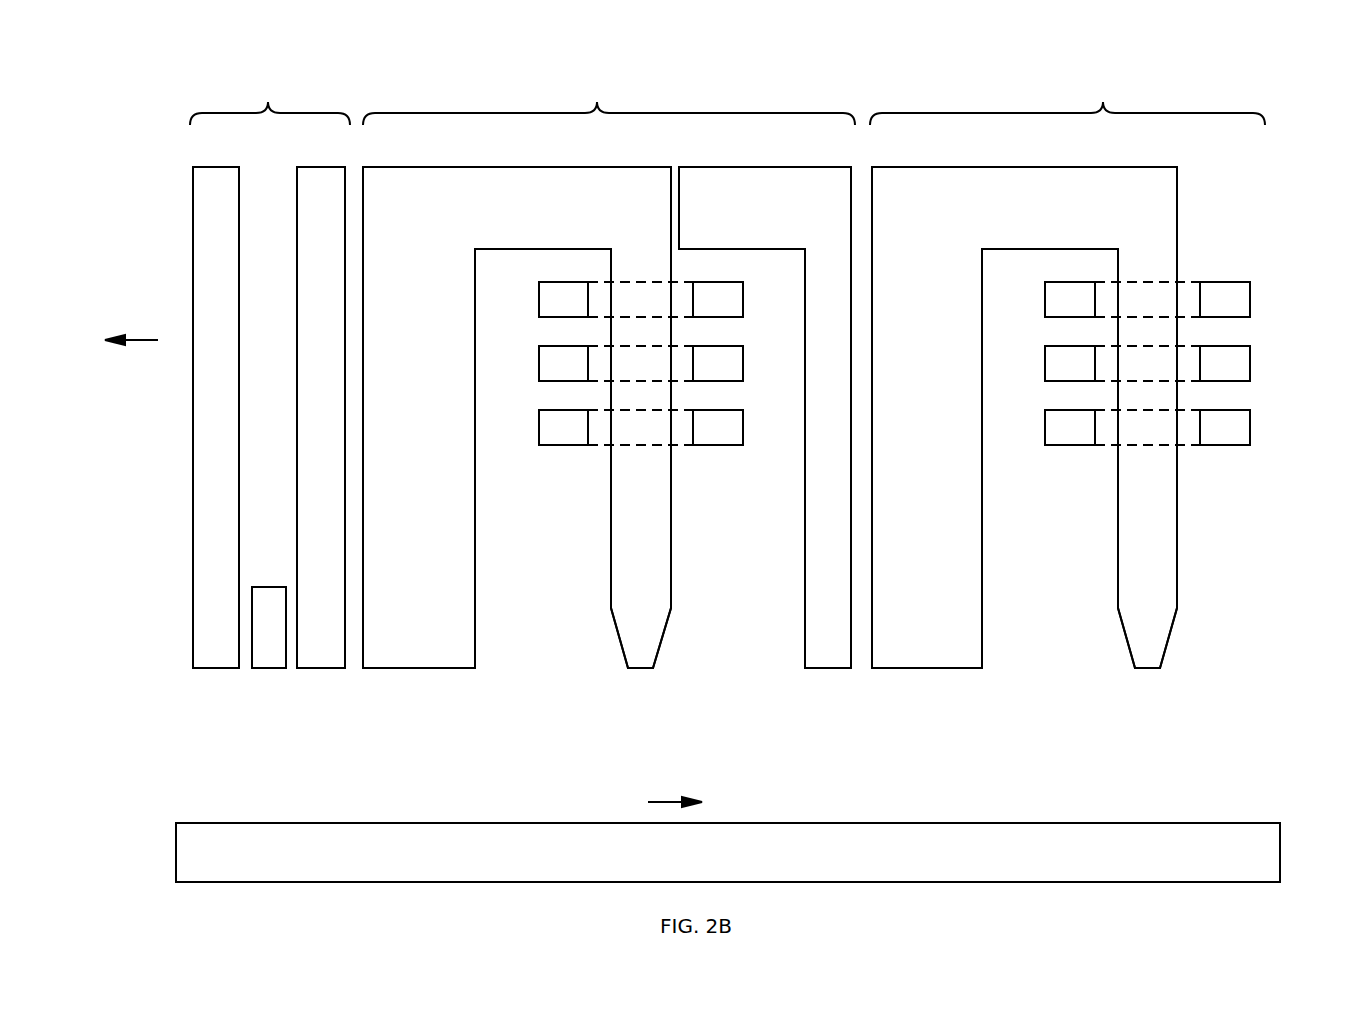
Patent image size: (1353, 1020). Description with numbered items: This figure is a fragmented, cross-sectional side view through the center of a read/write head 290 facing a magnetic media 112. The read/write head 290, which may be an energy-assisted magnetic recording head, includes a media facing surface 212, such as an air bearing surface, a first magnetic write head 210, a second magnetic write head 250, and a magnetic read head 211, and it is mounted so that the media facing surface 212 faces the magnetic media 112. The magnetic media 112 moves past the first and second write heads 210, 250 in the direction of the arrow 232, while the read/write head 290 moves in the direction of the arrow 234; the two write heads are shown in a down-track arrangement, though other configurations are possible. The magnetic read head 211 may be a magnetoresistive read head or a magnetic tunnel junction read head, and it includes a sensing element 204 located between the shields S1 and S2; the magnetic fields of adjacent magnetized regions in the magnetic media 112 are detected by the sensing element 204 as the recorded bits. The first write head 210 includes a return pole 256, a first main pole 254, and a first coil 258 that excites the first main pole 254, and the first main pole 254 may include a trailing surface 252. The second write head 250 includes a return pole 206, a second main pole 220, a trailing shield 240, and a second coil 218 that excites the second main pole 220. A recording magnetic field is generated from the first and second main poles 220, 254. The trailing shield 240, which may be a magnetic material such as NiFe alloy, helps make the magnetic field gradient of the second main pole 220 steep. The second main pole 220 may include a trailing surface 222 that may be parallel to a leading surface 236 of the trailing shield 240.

The read/write head 290 is at (148, 42).
The magnetic read head 211 is at (270, 98).
The second magnetic write head 250 is at (609, 98).
The first magnetic write head 210 is at (1067, 97).
The arrow 234 is at (141, 340).
The arrow 232 is at (665, 802).
The MR shield S1 is at (213, 668).
The MR shield S2 is at (322, 668).
The sensing element 204 is at (268, 668).
The return pole 206 is at (420, 668).
The second main pole 220 is at (611, 634).
The trailing surface 222 is at (672, 600).
The media facing surface 212 is at (640, 668).
The second coil 218 is at (565, 445).
The trailing shield 240 is at (828, 668).
The leading surface 236 is at (805, 515).
The return pole 256 is at (925, 668).
The first main pole 254 is at (1118, 634).
The trailing surface 252 is at (1178, 600).
The first coil 258 is at (1072, 445).
The magnetic media 112 is at (1282, 851).